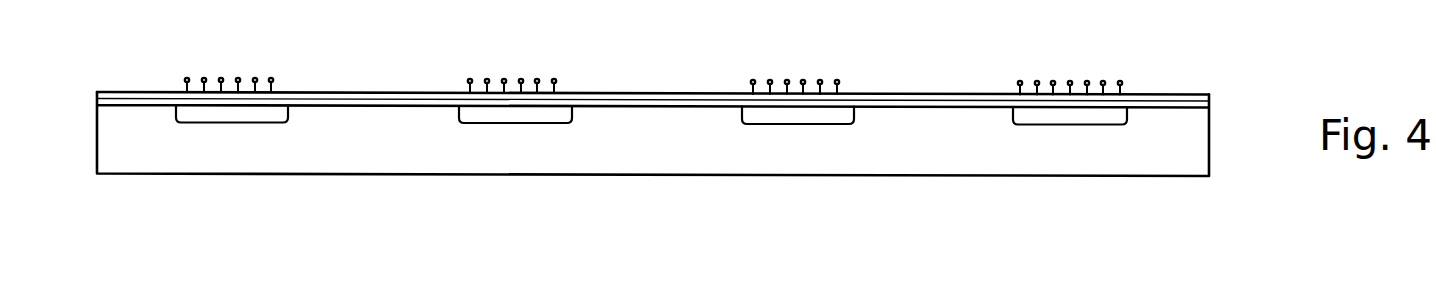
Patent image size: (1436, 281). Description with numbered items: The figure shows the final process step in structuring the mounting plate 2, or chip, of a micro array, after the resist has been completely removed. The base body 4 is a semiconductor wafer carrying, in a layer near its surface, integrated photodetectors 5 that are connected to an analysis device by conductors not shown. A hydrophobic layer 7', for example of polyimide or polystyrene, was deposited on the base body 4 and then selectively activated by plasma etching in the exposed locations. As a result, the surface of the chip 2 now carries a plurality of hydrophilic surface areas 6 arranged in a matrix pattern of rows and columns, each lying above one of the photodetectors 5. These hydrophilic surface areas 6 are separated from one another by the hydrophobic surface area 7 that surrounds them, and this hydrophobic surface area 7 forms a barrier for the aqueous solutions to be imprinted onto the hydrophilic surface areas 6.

The mounting plate 2 is at (1210, 198).
The base body 4 is at (933, 168).
The photodetectors 5 is at (234, 116).
The hydrophilic surface areas 6 is at (223, 62).
The hydrophobic surface area 7 is at (651, 67).
The hydrophobic layer 7' is at (679, 115).